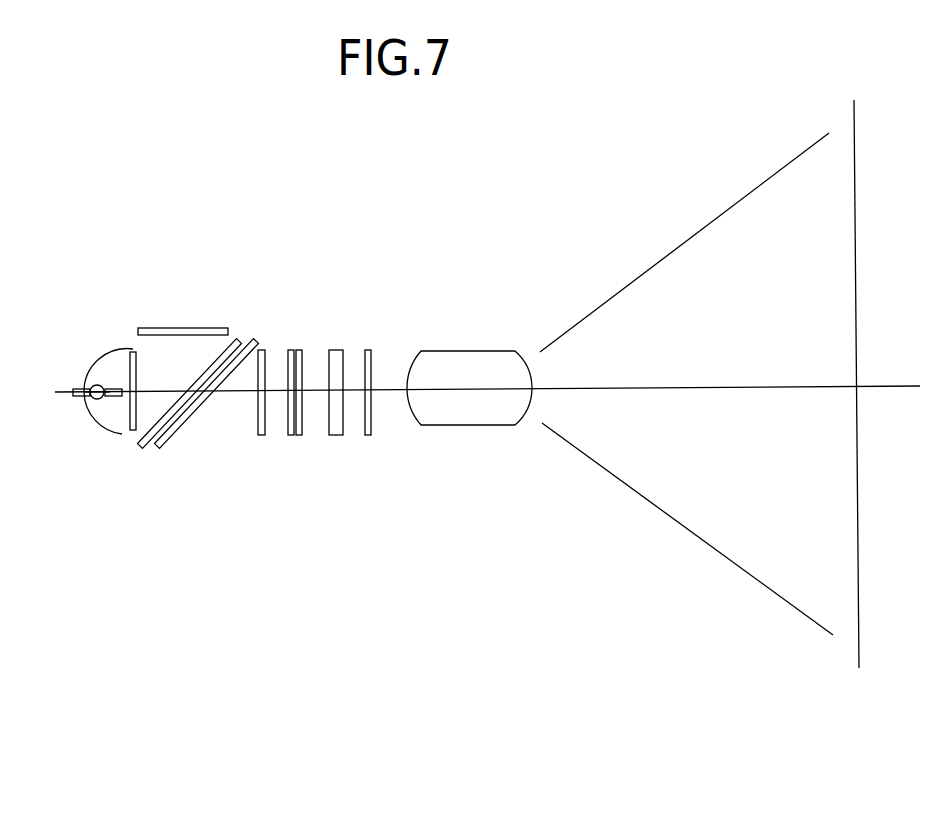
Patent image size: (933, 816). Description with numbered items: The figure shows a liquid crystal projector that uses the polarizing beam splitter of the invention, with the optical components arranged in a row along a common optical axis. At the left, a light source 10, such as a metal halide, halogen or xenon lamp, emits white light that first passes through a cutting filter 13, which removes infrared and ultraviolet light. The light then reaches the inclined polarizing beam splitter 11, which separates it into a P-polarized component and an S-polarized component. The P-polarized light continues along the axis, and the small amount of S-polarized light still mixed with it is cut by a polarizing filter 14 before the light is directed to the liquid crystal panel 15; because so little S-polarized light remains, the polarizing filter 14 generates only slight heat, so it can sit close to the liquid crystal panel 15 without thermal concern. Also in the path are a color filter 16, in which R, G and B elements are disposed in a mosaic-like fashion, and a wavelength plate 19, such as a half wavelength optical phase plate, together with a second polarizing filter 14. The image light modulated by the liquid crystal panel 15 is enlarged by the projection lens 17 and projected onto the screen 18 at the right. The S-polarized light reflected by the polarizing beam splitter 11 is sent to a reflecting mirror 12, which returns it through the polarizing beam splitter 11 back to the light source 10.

The light source 10 is at (86, 397).
The polarizing beam splitter 11 is at (138, 443).
The reflecting mirror 12 is at (178, 328).
The cutting filter 13 is at (132, 349).
The polarizing filter 14 is at (261, 438).
The liquid crystal panel 15 is at (335, 350).
The color filter 16 is at (290, 350).
The projection lens 17 is at (437, 351).
The screen 18 is at (854, 153).
The wavelength plate 19 is at (300, 435).